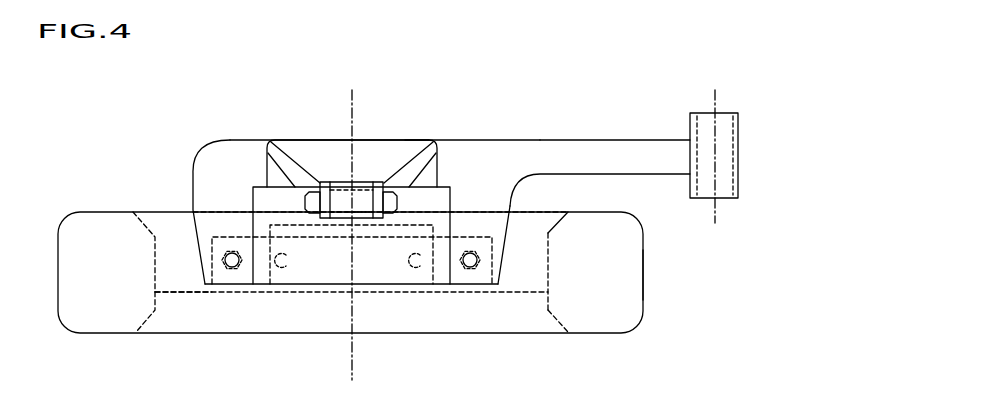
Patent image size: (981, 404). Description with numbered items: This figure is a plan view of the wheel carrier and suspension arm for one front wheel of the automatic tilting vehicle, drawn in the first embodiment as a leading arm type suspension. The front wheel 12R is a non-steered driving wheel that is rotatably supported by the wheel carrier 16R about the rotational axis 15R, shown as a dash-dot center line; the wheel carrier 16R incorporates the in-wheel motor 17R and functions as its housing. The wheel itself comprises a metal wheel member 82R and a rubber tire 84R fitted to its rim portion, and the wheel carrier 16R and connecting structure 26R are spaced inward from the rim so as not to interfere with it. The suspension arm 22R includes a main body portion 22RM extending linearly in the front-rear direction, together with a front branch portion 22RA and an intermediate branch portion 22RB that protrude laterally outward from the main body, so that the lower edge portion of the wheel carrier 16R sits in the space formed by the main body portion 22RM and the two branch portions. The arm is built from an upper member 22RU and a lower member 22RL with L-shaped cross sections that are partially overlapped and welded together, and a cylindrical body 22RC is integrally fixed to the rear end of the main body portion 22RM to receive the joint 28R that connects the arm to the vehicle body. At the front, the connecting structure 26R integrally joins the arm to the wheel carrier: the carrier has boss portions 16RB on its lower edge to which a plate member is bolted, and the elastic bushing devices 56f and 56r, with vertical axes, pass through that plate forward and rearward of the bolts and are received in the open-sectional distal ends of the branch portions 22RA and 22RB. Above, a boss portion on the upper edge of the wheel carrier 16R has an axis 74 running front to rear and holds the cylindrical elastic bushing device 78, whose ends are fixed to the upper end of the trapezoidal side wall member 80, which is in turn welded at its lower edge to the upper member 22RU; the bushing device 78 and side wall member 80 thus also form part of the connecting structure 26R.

The front wheel 12R is at (90, 210).
The suspension arm 22R is at (470, 165).
The branch portion 22RA is at (208, 227).
The main body portion 22RM is at (535, 140).
The upper member 22RU is at (583, 147).
The lower member 22RL is at (575, 167).
The branch portion 22RB is at (510, 227).
The cylindrical body 22RC is at (738, 168).
The wheel carrier 16R is at (268, 139).
The side wall member 80 is at (412, 142).
The axis 74 is at (290, 202).
The in-wheel motor 17R is at (415, 208).
The elastic bushing device 78 is at (362, 183).
The rotational axis 15R is at (355, 97).
The boss portions 16RB is at (288, 268).
The elastic bushing device 56f is at (232, 270).
The elastic bushing device 56r is at (472, 270).
The connecting structure 26R is at (208, 303).
The tire 84R is at (643, 287).
The wheel member 82R is at (552, 303).
The joint 28R is at (725, 118).